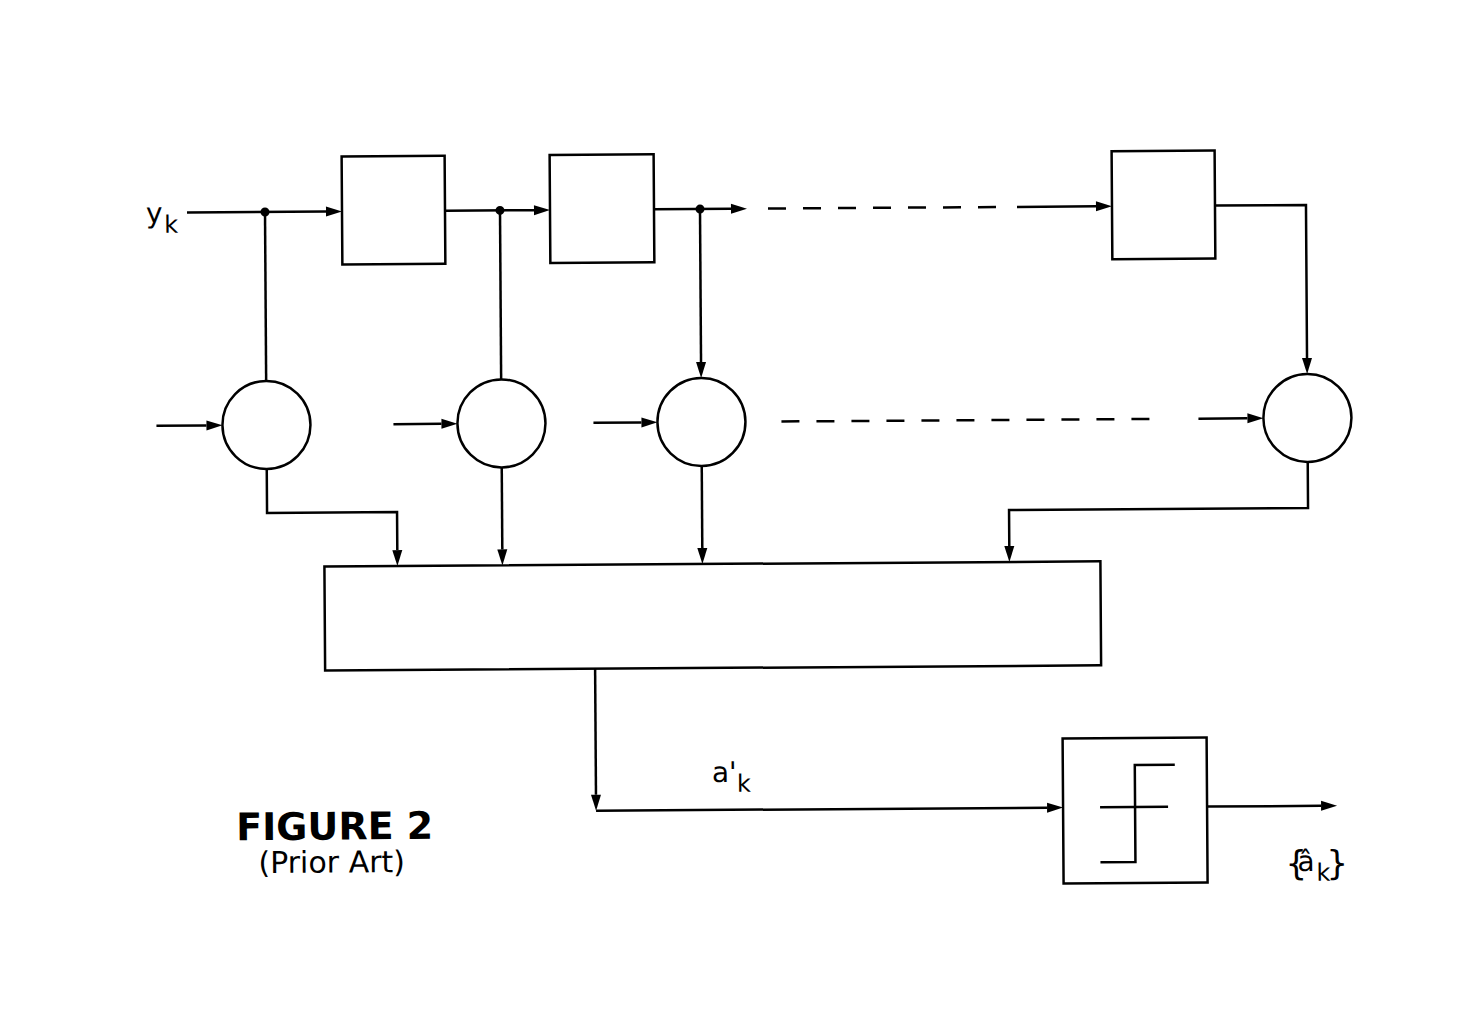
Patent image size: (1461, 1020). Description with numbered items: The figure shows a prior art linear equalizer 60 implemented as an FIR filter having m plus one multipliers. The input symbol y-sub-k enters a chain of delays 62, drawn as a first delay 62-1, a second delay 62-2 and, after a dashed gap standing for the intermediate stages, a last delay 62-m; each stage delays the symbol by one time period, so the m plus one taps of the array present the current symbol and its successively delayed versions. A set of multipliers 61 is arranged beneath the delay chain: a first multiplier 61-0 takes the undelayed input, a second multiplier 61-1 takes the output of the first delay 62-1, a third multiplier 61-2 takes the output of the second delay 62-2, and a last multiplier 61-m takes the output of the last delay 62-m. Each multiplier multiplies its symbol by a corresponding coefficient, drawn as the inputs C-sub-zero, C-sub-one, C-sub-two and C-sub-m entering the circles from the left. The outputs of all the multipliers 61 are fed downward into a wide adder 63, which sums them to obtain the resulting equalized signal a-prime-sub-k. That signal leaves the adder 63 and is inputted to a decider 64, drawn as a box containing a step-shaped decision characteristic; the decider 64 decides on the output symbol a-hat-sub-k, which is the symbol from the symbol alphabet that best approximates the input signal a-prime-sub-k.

The transversal filter (equalizer) 60 is at (951, 126).
The multipliers 61 is at (1382, 398).
The multiplier 61-0 is at (292, 390).
The multiplier 61-1 is at (530, 390).
The multiplier 61-2 is at (731, 388).
The multiplier 61-m is at (1334, 389).
The delay elements 62 is at (1338, 208).
The delay element 62-1 is at (383, 157).
The delay element 62-2 is at (594, 157).
The delay element 62-m is at (1152, 159).
The summer (adder) 63 is at (1145, 625).
The slicer (decision device) 64 is at (1247, 746).